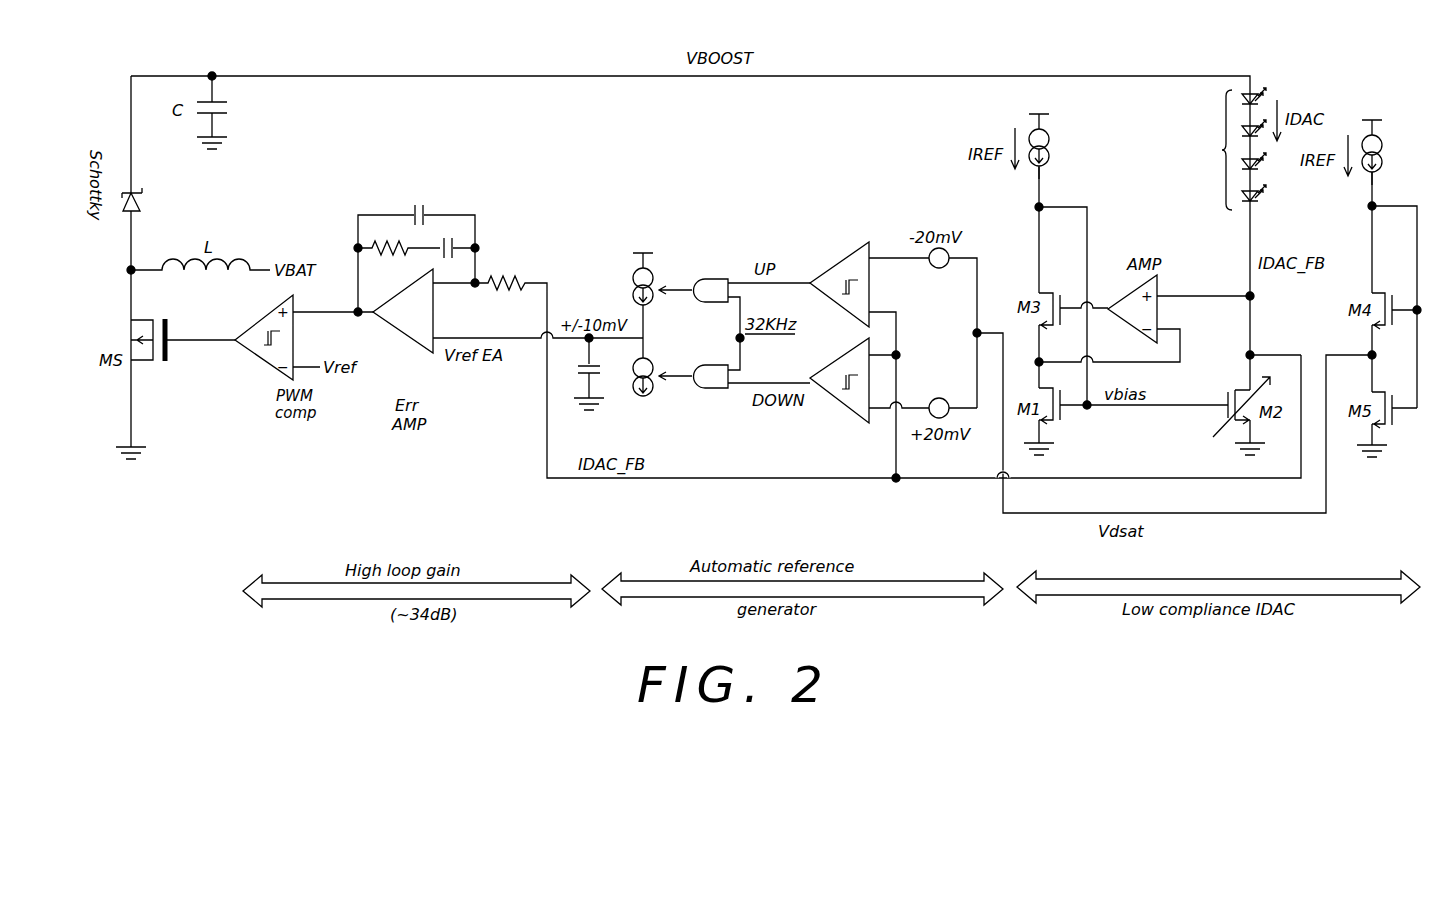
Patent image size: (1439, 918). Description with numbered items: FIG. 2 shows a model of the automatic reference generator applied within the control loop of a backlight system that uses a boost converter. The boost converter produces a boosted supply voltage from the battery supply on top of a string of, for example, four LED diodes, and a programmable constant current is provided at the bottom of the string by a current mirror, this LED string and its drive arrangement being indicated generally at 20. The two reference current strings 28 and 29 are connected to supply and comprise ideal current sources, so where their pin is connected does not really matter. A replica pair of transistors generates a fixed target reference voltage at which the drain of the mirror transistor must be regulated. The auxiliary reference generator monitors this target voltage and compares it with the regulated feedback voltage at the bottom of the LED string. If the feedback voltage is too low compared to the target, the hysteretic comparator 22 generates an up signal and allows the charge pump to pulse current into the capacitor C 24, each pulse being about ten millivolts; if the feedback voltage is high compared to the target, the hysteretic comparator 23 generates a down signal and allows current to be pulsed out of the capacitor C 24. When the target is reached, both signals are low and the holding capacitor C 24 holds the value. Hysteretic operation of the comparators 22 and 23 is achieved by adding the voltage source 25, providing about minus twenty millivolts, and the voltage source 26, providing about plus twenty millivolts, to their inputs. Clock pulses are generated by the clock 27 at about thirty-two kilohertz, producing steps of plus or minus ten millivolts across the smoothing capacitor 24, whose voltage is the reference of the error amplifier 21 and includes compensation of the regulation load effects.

The LED string 20 is at (1231, 239).
The error amplifier 21 is at (403, 334).
The hysteretic comparator 22 is at (843, 262).
The hysteretic comparator 23 is at (842, 406).
The capacitor C 24 is at (580, 366).
The voltage source 25 is at (935, 268).
The voltage source 26 is at (935, 398).
The clock 27 is at (737, 338).
The IREF string 28 is at (1039, 238).
The IREF string 29 is at (1372, 232).